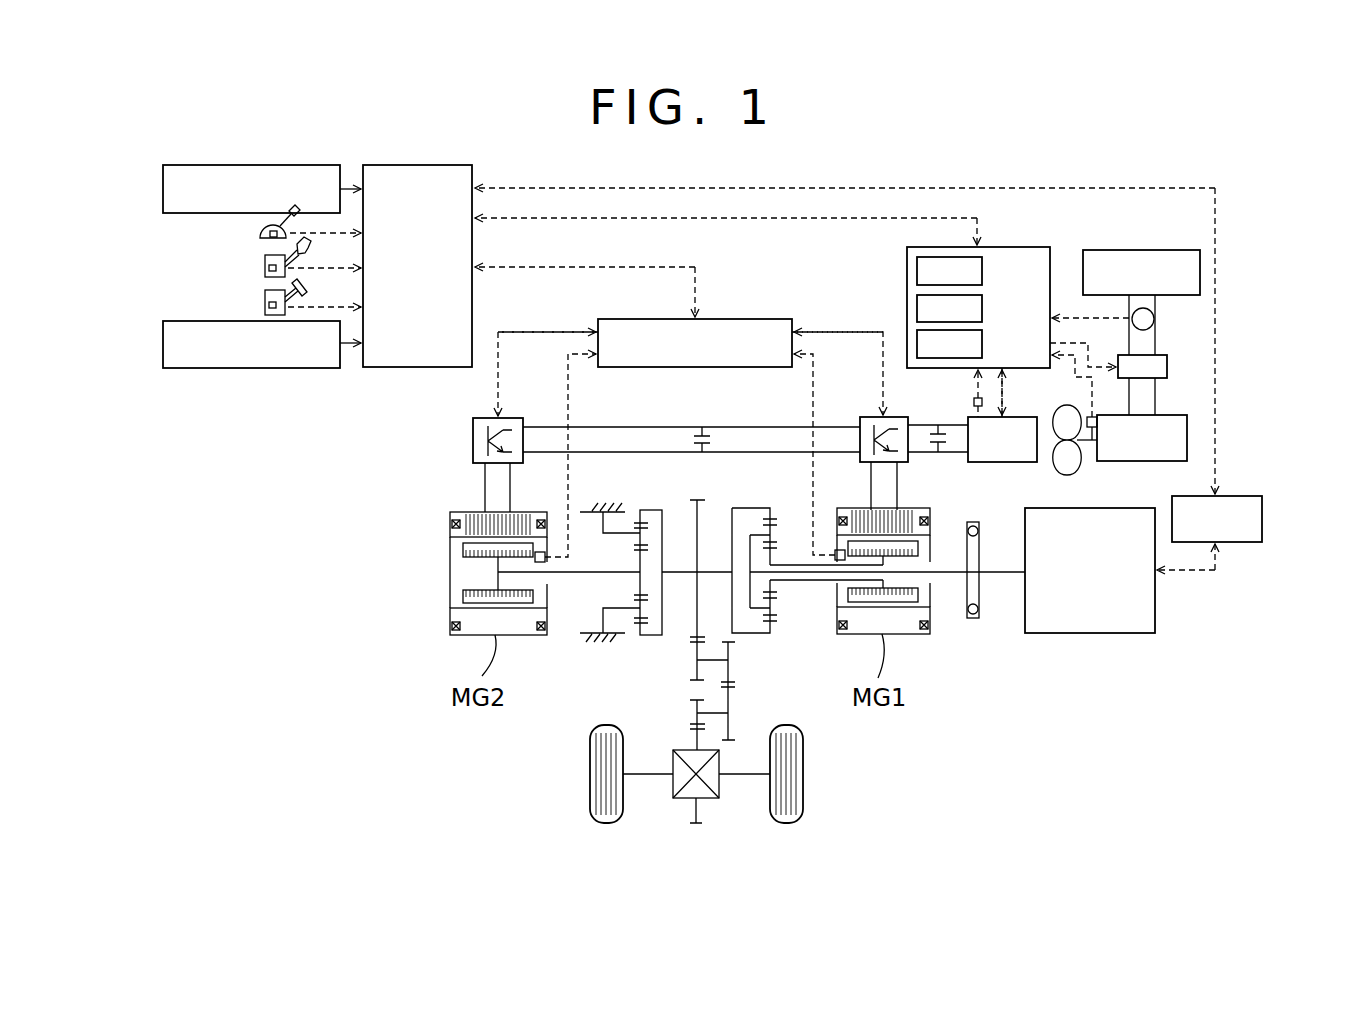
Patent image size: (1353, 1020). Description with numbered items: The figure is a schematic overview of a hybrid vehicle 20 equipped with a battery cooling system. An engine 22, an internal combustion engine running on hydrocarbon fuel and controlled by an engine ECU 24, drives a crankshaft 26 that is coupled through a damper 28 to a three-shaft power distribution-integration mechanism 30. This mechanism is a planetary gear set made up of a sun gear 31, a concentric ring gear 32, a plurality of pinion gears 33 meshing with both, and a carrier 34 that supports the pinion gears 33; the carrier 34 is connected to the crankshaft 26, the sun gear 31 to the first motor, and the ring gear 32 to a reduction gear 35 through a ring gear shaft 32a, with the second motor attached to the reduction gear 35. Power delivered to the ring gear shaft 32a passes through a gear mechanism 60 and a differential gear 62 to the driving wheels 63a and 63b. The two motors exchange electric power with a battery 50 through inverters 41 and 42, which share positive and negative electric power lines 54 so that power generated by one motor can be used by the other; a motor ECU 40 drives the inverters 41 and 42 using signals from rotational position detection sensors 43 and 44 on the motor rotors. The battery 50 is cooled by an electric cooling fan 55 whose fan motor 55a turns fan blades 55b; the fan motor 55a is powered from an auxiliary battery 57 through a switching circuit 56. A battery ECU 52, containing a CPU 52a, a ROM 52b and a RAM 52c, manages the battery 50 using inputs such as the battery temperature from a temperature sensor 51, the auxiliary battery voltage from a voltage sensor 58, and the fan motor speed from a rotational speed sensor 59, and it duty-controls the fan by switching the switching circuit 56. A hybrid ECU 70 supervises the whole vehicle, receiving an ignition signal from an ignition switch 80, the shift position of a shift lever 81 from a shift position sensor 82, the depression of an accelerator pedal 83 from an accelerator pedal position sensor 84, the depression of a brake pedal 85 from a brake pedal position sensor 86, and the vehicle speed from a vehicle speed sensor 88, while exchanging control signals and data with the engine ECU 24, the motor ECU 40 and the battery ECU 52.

The hybrid vehicle 20 is at (914, 184).
The engine 22 is at (1098, 633).
The engine ECU 24 is at (1240, 496).
The crankshaft 26 is at (1000, 572).
The damper 28 is at (973, 618).
The power distribution-integration mechanism 30 is at (832, 553).
The sun gear 31 is at (777, 589).
The ring gear 32 is at (775, 631).
The ring gear shaft 32a is at (705, 566).
The pinion gears 33 is at (775, 610).
The carrier 34 is at (751, 535).
The reduction gear 35 is at (646, 508).
The motor ECU 40 is at (740, 319).
The inverter 41 is at (872, 417).
The inverter 42 is at (512, 418).
The rotational position detection sensor 43 is at (838, 550).
The rotational position detection sensor 44 is at (541, 552).
The battery 50 is at (997, 462).
The temperature sensor 51 is at (974, 402).
The battery ECU 52 is at (1018, 308).
The CPU 52a is at (982, 272).
The ROM 52b is at (982, 309).
The RAM 52c is at (982, 344).
The electric power lines 54 is at (757, 452).
The cooling fan 55 is at (1116, 443).
The fan motor 55a is at (1130, 461).
The fan blades 55b is at (1058, 472).
The switching circuit 56 is at (1167, 366).
The auxiliary battery 57 is at (1163, 250).
The voltage sensor 58 is at (1155, 319).
The rotational speed sensor 59 is at (1088, 412).
The gear mechanism 60 is at (752, 692).
The differential gear 62 is at (719, 788).
The driving wheel 63a is at (590, 774).
The driving wheel 63b is at (803, 774).
The hybrid ECU 70 is at (428, 165).
The ignition switch 80 is at (163, 190).
The shift lever 81 is at (289, 213).
The shift position sensor 82 is at (260, 236).
The accelerator pedal 83 is at (296, 248).
The accelerator pedal position sensor 84 is at (265, 269).
The brake pedal 85 is at (294, 289).
The brake pedal position sensor 86 is at (265, 306).
The vehicle speed sensor 88 is at (163, 340).